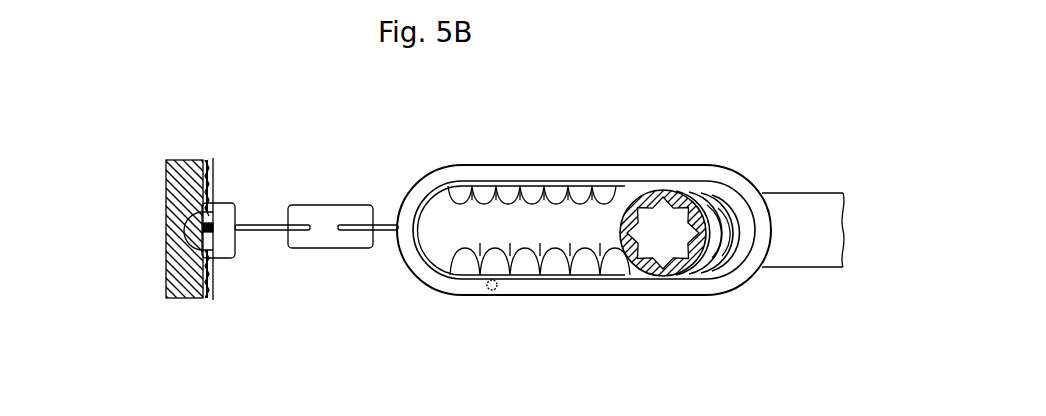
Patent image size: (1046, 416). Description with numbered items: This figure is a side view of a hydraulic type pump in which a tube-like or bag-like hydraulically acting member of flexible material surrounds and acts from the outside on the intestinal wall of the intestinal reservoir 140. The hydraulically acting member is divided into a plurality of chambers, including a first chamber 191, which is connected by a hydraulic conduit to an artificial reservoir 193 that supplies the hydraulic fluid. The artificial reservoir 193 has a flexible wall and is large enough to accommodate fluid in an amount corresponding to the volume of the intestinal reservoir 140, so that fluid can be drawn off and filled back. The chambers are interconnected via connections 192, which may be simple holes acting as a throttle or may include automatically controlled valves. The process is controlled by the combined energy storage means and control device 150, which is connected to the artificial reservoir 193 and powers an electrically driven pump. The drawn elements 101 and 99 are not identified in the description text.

The wall 101 is at (166, 195).
The dome / button 99 is at (187, 237).
The combined energy storage means and control device 150 is at (227, 215).
The artificial reservoir 193 is at (324, 212).
The first chamber 191 is at (604, 291).
The intestinal reservoir 140 is at (445, 252).
The connections 192 is at (493, 291).